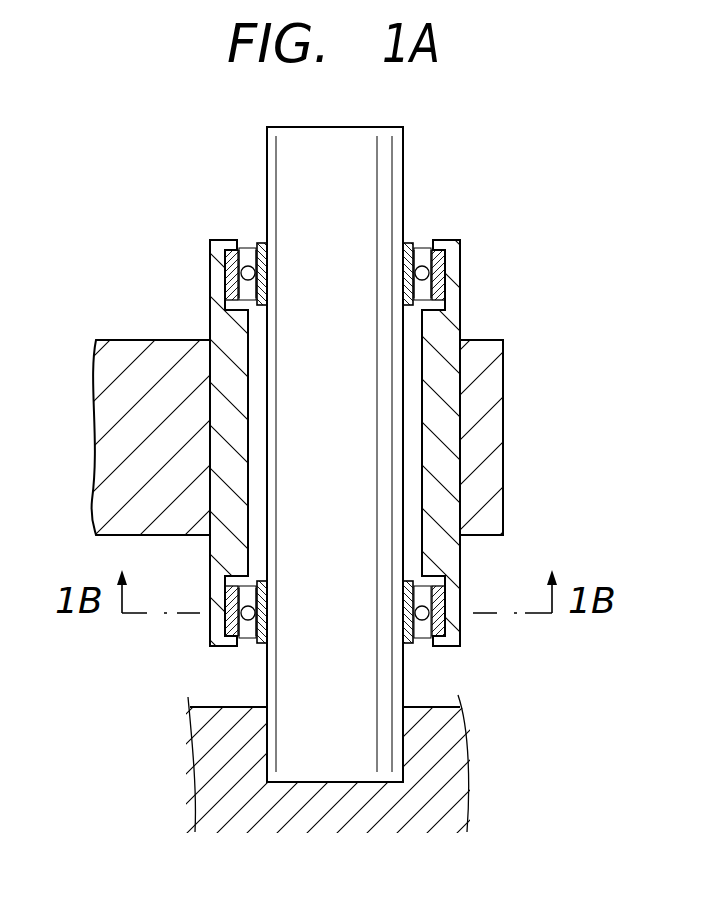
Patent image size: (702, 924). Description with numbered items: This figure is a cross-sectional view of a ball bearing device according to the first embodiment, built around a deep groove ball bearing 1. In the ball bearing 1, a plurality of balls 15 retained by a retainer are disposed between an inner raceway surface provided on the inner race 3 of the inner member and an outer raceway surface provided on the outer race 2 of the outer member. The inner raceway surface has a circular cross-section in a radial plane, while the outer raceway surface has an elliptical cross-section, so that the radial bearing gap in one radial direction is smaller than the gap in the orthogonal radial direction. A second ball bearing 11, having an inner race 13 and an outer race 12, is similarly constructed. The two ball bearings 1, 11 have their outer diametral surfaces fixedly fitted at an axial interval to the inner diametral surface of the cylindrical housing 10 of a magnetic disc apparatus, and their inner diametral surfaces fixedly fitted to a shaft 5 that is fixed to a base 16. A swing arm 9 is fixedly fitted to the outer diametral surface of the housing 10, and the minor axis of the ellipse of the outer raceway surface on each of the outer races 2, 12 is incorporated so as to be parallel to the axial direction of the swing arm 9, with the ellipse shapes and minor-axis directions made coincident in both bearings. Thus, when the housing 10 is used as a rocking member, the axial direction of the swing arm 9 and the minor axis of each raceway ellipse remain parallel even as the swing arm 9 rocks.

The deep groove ball bearing 1 is at (245, 228).
The outer race 2 is at (440, 278).
The inner race 3 is at (411, 238).
The shaft 5 is at (340, 133).
The swing arm 9 is at (148, 356).
The cylindrical housing 10 is at (220, 254).
The ball bearing 11 is at (230, 658).
The outer race 12 is at (438, 622).
The inner race 13 is at (418, 638).
The balls 15 is at (430, 270).
The base 16 is at (457, 768).